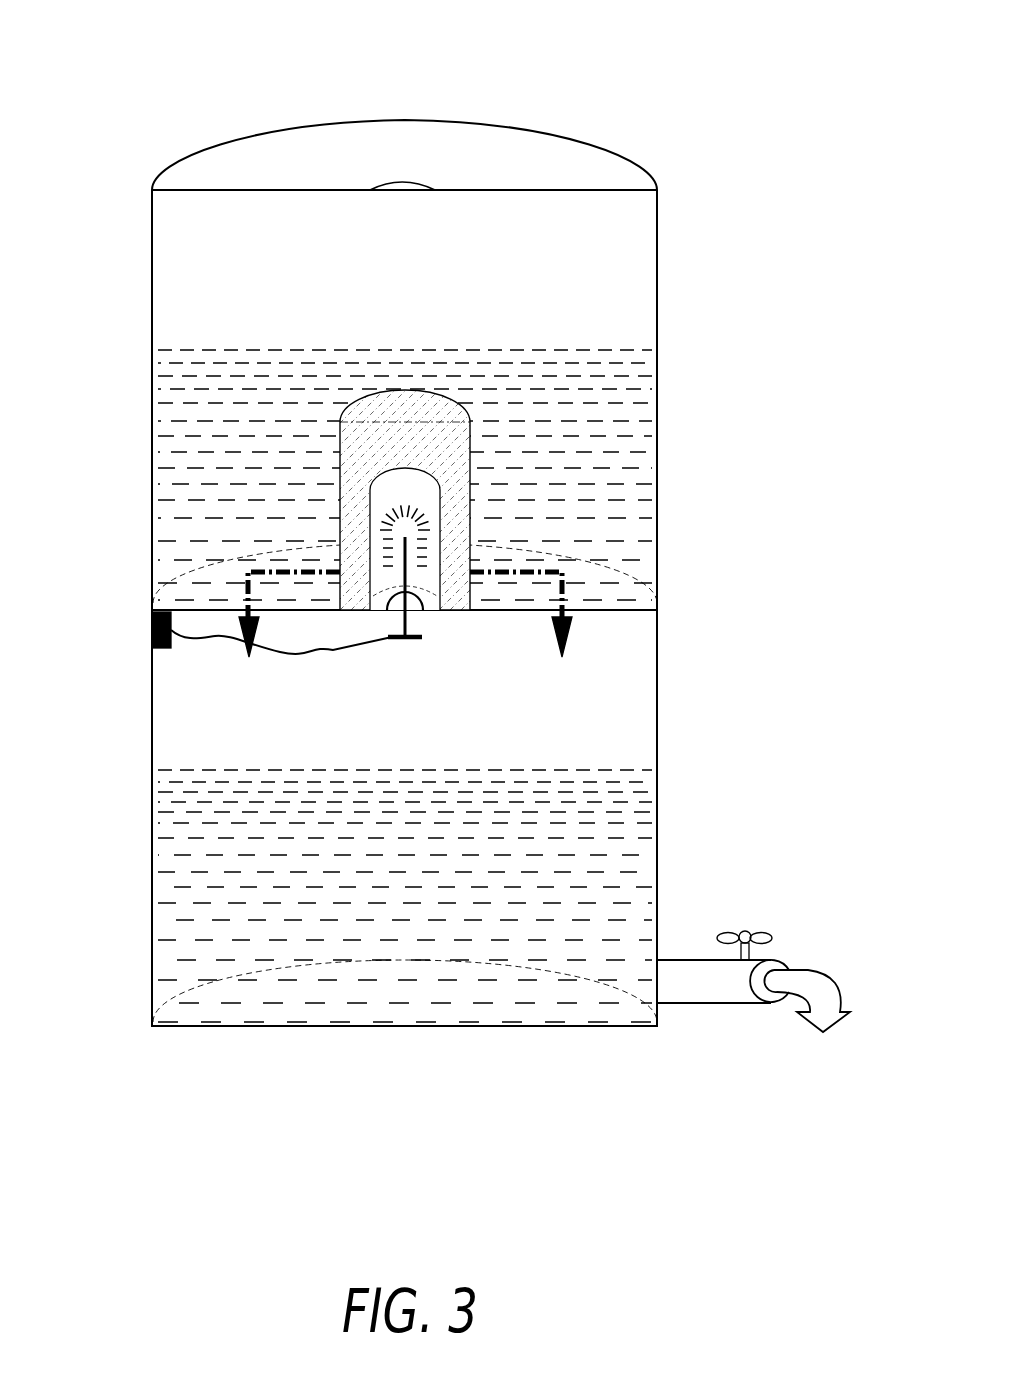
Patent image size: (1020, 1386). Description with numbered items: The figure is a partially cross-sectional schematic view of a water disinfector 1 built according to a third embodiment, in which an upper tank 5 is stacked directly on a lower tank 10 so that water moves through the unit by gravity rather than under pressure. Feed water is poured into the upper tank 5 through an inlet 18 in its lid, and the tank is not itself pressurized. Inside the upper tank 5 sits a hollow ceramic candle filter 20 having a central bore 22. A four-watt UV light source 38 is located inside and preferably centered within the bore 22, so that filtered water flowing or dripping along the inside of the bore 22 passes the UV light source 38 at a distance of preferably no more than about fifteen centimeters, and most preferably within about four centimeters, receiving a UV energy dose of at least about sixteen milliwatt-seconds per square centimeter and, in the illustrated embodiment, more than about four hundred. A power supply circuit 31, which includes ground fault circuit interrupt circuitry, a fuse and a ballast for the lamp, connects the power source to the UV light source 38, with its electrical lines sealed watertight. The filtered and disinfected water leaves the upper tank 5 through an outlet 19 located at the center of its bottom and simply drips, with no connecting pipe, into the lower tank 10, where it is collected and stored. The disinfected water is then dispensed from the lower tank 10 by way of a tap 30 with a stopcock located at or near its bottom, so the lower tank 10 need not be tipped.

The water disinfector 1 is at (463, 516).
The upper tank 5 is at (459, 347).
The lower tank 10 is at (662, 700).
The inlet 18 is at (405, 182).
The outlet 19 is at (422, 607).
The ceramic candle filter 20 is at (470, 450).
The central bore 22 is at (440, 495).
The tap 30 is at (680, 958).
The power supply circuit 31 is at (152, 637).
The UV light source 38 is at (405, 547).